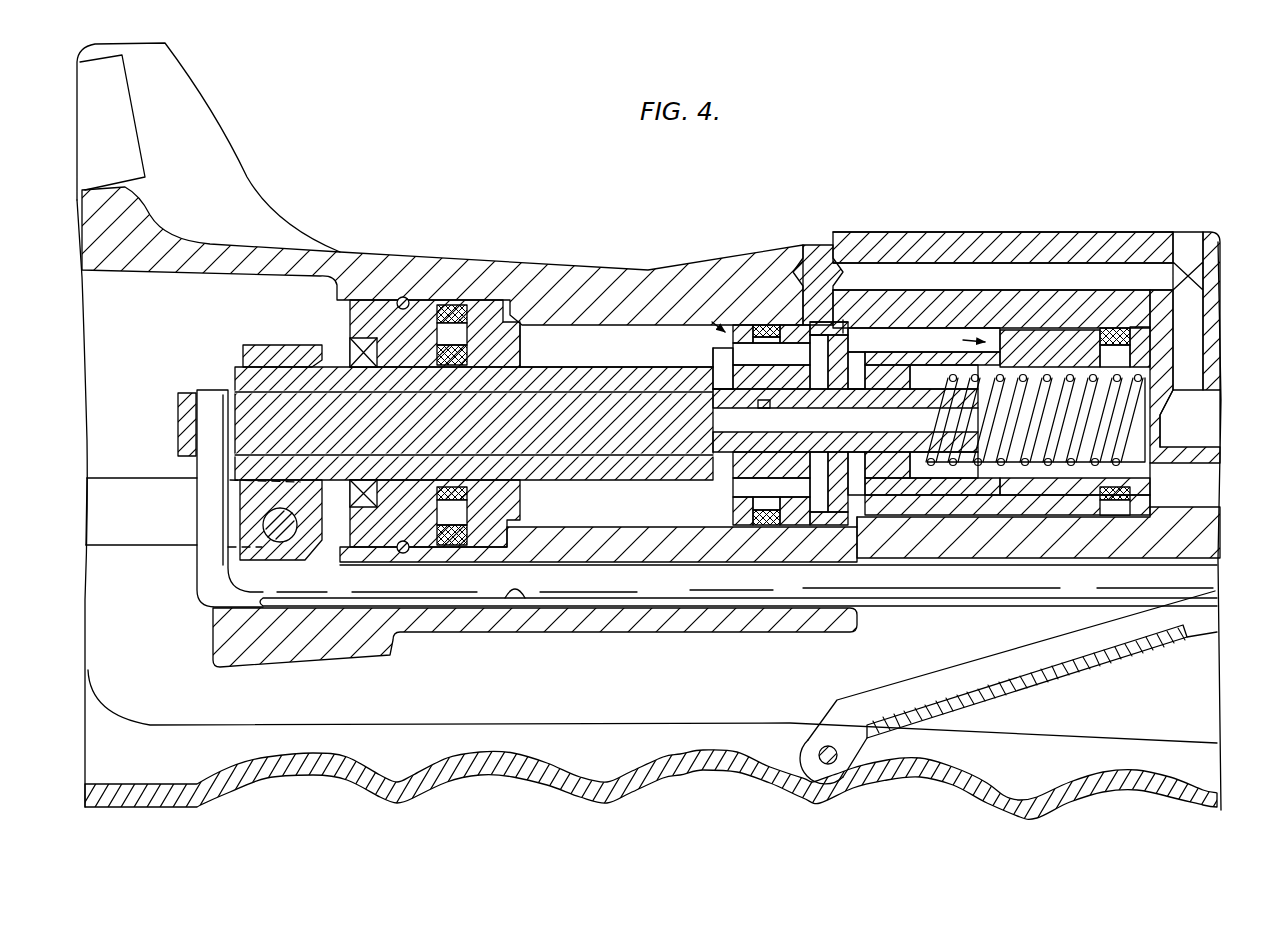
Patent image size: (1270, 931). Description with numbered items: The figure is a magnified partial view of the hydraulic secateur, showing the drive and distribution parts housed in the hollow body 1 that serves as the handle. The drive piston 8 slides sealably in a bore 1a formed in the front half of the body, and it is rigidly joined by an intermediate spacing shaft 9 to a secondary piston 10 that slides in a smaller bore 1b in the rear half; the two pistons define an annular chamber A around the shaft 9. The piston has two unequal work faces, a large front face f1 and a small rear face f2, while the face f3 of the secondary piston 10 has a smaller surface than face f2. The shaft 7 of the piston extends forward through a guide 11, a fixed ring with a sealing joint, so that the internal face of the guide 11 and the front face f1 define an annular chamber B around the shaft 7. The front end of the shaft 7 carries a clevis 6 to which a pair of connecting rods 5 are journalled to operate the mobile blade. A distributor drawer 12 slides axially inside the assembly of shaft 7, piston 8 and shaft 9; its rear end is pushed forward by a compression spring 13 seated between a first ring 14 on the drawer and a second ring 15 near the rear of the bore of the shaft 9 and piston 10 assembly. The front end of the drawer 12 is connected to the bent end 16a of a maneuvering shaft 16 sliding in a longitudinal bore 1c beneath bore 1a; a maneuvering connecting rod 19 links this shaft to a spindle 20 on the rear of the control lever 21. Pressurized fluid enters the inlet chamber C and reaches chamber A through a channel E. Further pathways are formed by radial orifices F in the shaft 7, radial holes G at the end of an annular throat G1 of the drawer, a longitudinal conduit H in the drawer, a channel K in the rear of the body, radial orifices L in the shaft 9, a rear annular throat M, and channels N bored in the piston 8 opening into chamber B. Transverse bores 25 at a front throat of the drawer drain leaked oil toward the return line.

The hollow body 1 is at (312, 158).
The bore 1a is at (545, 345).
The bore 1b is at (922, 492).
The longitudinal bore 1c is at (505, 600).
The connecting rods 5 is at (168, 535).
The clevis 6 is at (283, 345).
The shaft 7 is at (562, 380).
The drive piston 8 is at (740, 325).
The intermediate spacing shaft 9 is at (883, 478).
The secondary piston 10 is at (1064, 512).
The guide 11 is at (420, 312).
The distributor drawer 12 is at (592, 410).
The compression spring 13 is at (1012, 478).
The first ring 14 is at (957, 460).
The second ring 15 is at (1152, 378).
The maneuvering shaft 16 is at (655, 590).
The bent end 16a is at (207, 570).
The maneuvering connecting rod 19 is at (1025, 665).
The spindle 20 is at (823, 768).
The control lever 21 is at (695, 762).
The transverse bores 25 is at (688, 395).
The annular chamber A is at (912, 330).
The annular chamber B is at (528, 330).
The inlet chamber C is at (1200, 428).
The channel E is at (1113, 265).
The radial orifices F is at (722, 375).
The radial holes G is at (758, 405).
The annular throat G1 is at (762, 335).
The longitudinal conduit H is at (903, 417).
The channel K is at (1200, 489).
The radial orifices L is at (852, 392).
The annular throat M is at (822, 398).
The channels N is at (815, 324).
The large front face f1 is at (712, 322).
The small rear face f2 is at (843, 320).
The face f3 is at (963, 340).